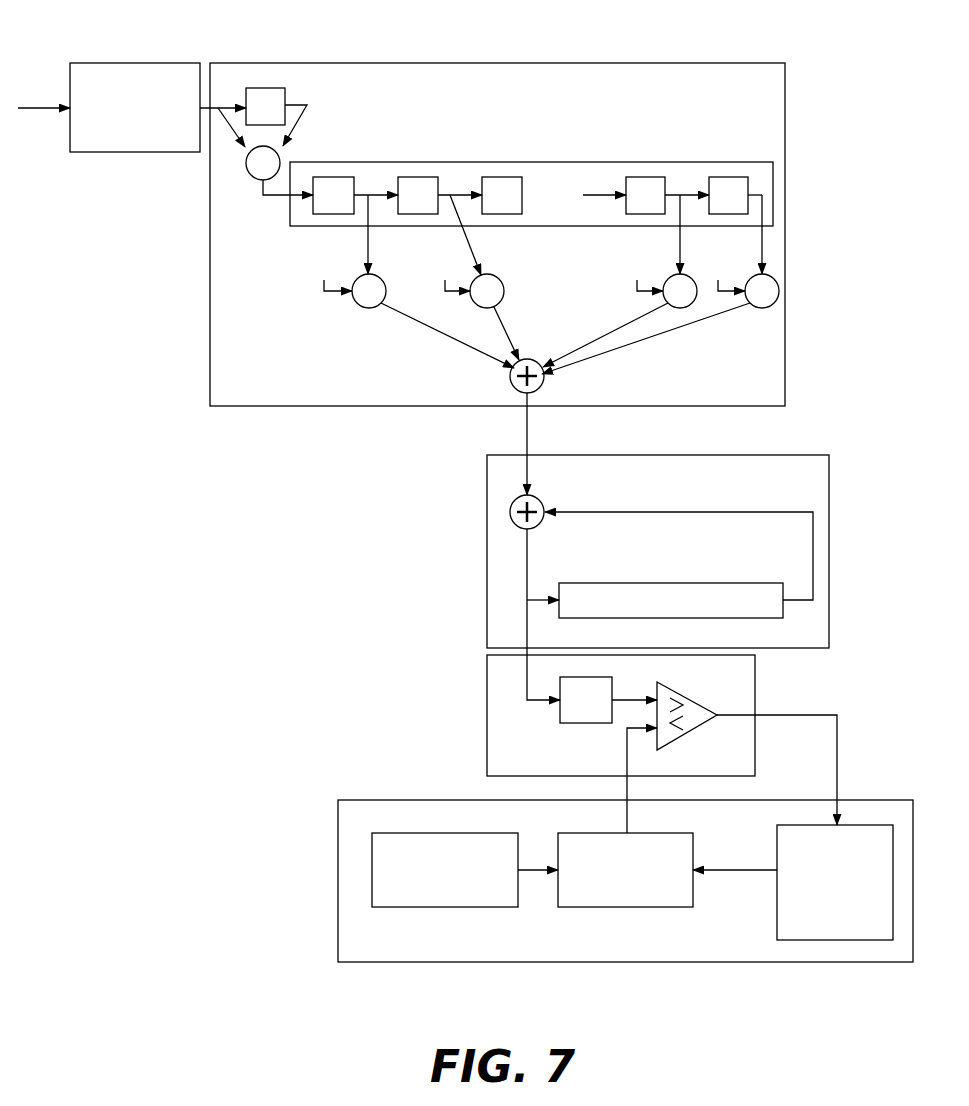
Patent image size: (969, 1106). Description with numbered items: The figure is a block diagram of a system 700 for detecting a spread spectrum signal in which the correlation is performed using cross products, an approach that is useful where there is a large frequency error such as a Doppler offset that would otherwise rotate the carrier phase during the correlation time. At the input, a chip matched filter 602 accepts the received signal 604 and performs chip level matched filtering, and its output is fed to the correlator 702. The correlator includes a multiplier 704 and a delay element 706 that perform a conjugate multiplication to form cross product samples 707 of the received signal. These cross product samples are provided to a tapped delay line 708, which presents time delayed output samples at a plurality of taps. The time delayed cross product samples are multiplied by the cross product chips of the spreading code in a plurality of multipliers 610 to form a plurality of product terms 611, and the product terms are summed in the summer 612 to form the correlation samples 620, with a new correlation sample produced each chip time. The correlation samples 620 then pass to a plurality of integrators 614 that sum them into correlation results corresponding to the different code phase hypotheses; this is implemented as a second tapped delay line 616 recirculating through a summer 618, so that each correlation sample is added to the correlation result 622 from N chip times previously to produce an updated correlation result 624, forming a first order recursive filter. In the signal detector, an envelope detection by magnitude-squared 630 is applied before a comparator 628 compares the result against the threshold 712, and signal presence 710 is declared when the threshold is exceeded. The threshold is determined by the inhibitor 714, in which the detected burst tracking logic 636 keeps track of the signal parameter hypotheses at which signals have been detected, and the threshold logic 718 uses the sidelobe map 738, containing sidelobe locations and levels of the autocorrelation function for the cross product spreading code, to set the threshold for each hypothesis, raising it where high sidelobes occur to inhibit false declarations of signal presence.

The system 700 is at (140, 655).
The chip matched filter 602 is at (172, 63).
The received signal 604 is at (33, 108).
The correlator 702 is at (568, 63).
The multiplier 704 is at (285, 93).
The delay element 706 is at (246, 163).
The cross product samples 707 is at (268, 197).
The tapped delay line 708 is at (575, 162).
The multipliers 610 is at (760, 308).
The product terms 611 is at (433, 332).
The summer 612 is at (515, 390).
The correlation samples 620 is at (528, 433).
The integrators 614 is at (782, 455).
The summer 618 is at (510, 517).
The correlation result 622 is at (695, 512).
The second tapped delay line 616 is at (715, 583).
The updated correlation result 624 is at (527, 565).
The magnitude-squared 630 is at (580, 725).
The comparator 628 is at (692, 730).
The threshold 712 is at (623, 784).
The signal presence 710 is at (837, 740).
The inhibitor 714 is at (338, 820).
The sidelobe map 738 is at (447, 908).
The threshold logic 718 is at (623, 908).
The detected burst tracking logic 636 is at (777, 913).